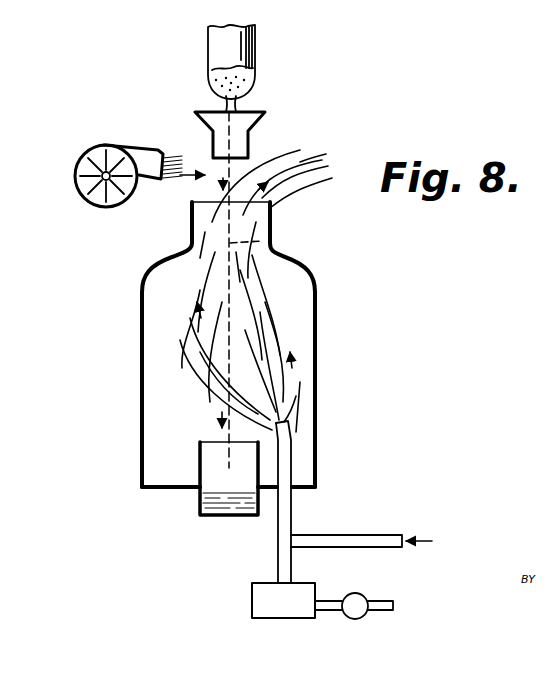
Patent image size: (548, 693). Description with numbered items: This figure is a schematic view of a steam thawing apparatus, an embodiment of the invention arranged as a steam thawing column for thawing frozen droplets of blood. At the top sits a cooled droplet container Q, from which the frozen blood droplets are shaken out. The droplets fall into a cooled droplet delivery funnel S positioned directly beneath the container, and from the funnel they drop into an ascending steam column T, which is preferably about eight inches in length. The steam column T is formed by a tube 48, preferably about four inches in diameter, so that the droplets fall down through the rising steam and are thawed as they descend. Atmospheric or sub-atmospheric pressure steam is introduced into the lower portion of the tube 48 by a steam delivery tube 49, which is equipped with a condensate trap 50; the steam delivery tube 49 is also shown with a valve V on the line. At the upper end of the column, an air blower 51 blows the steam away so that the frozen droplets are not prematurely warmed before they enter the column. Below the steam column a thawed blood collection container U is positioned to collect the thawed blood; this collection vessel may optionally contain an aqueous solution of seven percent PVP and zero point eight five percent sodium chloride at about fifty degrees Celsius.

The cooled droplet container Q is at (222, 47).
The cooled droplet delivery funnel S is at (243, 137).
The air blower 51 is at (85, 163).
The steam column T is at (265, 240).
The tube 48 is at (320, 342).
The thawed blood collection container U is at (215, 457).
The steam delivery tube 49 is at (283, 510).
The condensate trap 50 is at (300, 590).
The valve V is at (367, 606).